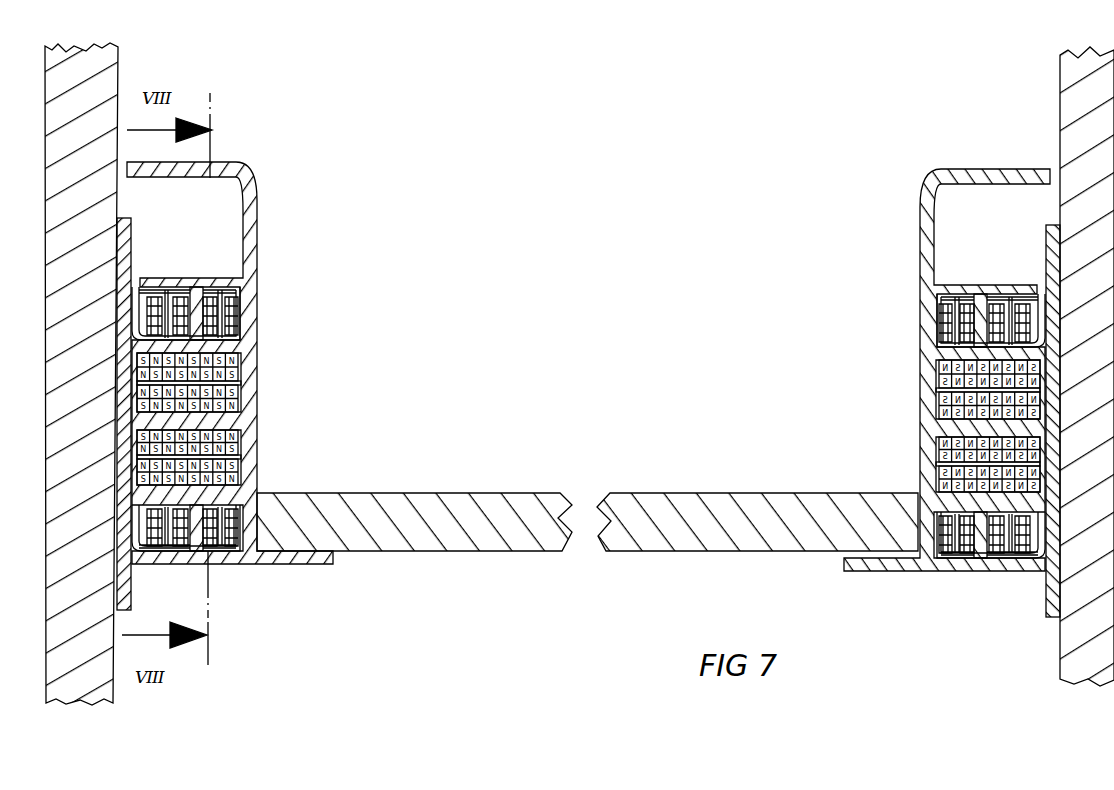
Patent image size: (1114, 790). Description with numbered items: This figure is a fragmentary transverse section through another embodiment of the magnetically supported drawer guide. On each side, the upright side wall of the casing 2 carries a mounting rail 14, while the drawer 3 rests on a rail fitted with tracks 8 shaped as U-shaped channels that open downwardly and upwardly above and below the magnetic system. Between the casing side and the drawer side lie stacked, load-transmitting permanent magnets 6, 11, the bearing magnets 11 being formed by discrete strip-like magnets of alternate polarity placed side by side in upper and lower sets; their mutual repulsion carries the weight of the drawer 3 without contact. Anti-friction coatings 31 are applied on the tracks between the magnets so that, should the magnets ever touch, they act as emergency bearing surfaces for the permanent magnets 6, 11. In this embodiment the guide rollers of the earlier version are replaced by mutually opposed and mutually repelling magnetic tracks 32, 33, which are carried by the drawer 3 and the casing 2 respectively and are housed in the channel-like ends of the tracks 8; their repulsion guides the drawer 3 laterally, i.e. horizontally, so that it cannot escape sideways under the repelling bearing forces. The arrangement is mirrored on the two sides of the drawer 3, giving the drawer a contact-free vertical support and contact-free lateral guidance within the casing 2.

The casing 2 is at (1078, 90).
The drawer 3 is at (683, 505).
The permanent magnet 6 is at (937, 411).
The track 8 is at (252, 362).
The bearing magnet 11 is at (936, 375).
The mounting rail 14 is at (130, 248).
The anti-friction coating 31 is at (937, 389).
The magnetic track 32 is at (243, 320).
The magnetic track 33 is at (204, 297).